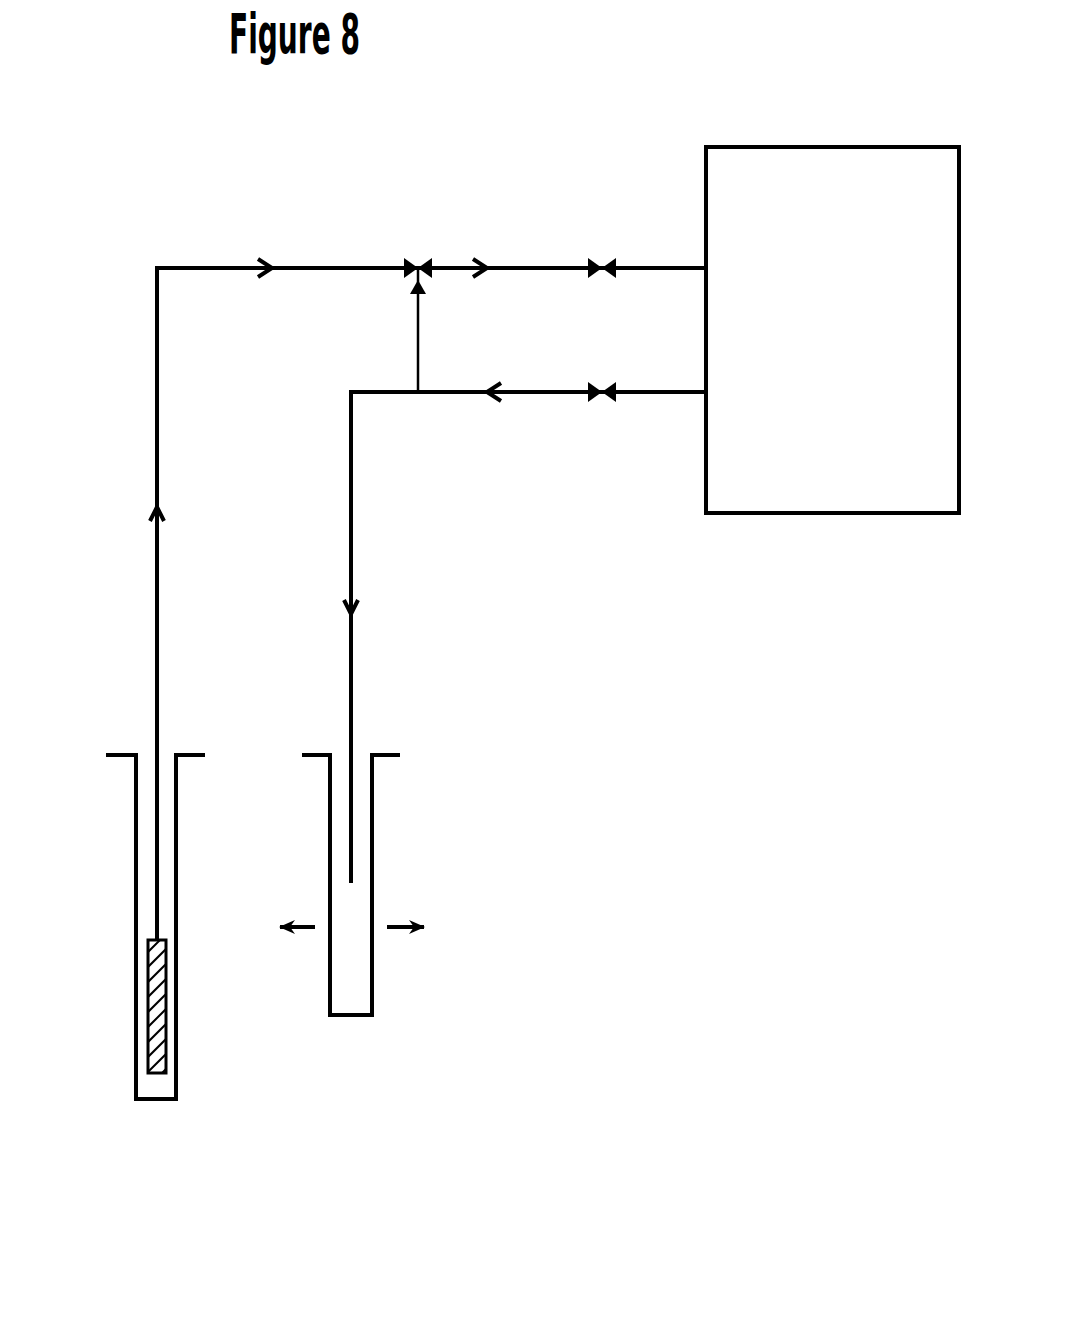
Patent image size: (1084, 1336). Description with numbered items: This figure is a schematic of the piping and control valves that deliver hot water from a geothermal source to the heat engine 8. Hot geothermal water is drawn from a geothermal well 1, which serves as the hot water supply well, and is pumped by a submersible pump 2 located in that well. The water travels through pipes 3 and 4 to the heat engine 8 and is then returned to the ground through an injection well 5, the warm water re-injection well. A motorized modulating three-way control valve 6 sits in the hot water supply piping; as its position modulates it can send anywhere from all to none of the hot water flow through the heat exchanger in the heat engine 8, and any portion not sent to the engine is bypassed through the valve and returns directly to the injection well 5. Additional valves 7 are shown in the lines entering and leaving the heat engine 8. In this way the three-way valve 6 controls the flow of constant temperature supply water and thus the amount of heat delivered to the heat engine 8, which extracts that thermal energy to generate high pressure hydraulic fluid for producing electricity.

The geothermal well 1 is at (180, 1083).
The submersible pump 2 is at (145, 988).
The pipe 3 is at (180, 262).
The pipe 4 is at (346, 440).
The injection well 5 is at (376, 871).
The motorized modulating three-way control valve 6 is at (421, 257).
The valve 7 is at (600, 257).
The heat engine 8 is at (806, 517).